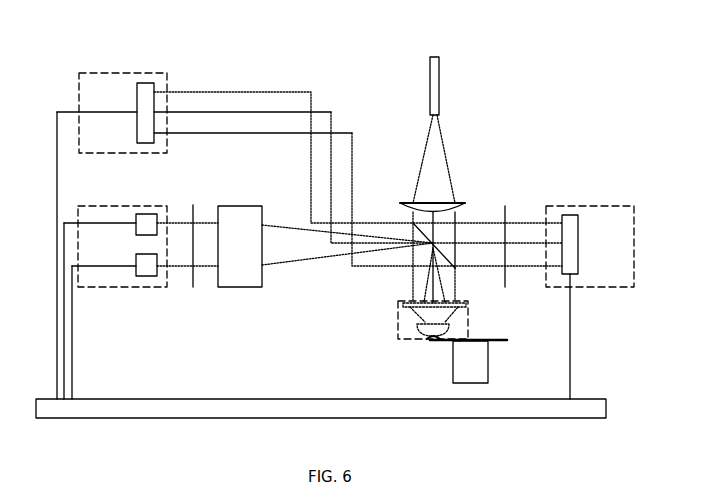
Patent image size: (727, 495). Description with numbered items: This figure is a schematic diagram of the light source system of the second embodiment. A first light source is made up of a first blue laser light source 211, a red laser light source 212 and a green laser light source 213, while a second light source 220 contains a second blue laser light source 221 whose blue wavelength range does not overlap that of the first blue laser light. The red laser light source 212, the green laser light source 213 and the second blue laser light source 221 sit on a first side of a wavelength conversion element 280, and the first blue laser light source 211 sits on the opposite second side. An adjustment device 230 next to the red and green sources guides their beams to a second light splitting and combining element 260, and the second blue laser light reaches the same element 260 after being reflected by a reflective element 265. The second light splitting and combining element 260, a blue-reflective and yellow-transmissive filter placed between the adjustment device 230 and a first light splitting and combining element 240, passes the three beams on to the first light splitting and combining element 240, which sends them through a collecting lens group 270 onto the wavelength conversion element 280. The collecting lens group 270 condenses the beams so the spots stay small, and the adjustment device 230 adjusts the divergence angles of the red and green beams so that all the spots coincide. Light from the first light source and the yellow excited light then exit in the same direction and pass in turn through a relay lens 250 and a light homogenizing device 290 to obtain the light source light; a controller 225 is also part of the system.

The first blue laser light source 211 is at (569, 205).
The red laser light source 212 is at (146, 214).
The green laser light source 213 is at (146, 276).
The second light source 220 is at (125, 72).
The second blue laser light source 221 is at (146, 83).
The controller 225 is at (217, 398).
The adjustment device 230 is at (240, 205).
The first light splitting and combining element 240 is at (456, 268).
The relay lens 250 is at (466, 205).
The second light splitting and combining element 260 is at (303, 215).
The reflective element 265 is at (357, 137).
The collecting lens group 270 is at (398, 316).
The wavelength conversion element 280 is at (498, 342).
The light homogenizing device 290 is at (439, 75).